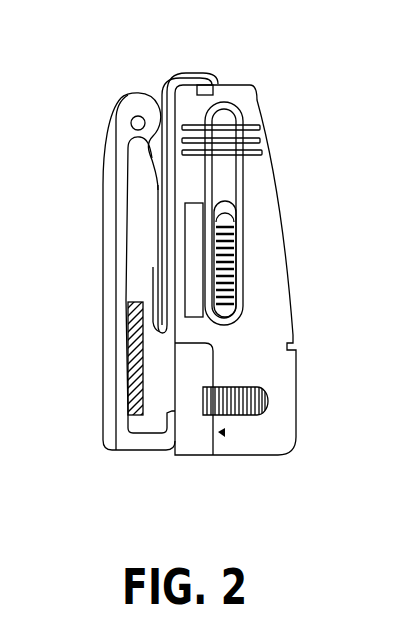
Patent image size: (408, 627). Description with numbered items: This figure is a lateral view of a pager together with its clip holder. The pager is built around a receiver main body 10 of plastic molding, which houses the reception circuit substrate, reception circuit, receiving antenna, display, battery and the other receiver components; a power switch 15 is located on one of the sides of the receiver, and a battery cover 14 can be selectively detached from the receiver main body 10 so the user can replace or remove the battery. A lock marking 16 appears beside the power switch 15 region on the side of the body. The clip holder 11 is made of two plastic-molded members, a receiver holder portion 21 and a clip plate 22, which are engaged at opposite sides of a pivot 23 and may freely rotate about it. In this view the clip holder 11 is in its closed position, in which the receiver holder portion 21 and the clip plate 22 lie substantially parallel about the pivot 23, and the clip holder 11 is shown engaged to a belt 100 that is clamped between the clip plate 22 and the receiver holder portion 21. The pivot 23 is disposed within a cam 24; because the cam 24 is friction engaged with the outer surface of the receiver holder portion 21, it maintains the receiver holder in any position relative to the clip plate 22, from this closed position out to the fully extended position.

The receiver main body 10 is at (297, 278).
The clip holder 11 is at (112, 82).
The battery cover 14 is at (200, 440).
The power switch 15 is at (240, 223).
The lock button 16 is at (268, 392).
The receiver holder portion 21 is at (153, 267).
The clip plate 22 is at (108, 245).
The pivot 23 is at (145, 102).
The cam 24 is at (128, 137).
The belt 100 is at (128, 350).